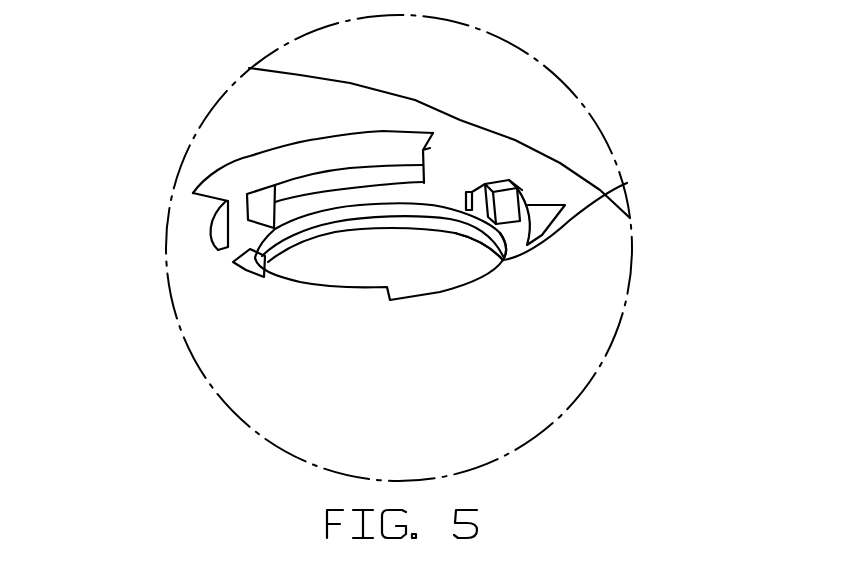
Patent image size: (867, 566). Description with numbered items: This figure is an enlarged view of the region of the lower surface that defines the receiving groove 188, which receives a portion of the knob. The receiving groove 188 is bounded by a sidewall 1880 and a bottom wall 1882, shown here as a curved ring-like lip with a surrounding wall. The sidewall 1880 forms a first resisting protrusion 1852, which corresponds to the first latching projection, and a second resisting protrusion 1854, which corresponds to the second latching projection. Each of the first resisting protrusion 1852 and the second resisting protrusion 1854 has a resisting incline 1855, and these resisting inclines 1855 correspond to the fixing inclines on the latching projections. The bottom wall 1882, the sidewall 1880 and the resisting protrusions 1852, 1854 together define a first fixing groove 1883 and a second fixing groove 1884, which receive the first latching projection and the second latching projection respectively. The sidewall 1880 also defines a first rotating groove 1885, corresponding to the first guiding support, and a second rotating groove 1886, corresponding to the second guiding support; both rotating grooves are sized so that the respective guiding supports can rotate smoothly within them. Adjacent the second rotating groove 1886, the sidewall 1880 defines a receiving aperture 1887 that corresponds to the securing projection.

The receiving groove 188 is at (593, 280).
The first resisting protrusion 1852 is at (611, 177).
The second resisting protrusion 1854 is at (156, 246).
The resisting incline 1855 is at (388, 221).
The sidewall 1880 is at (497, 158).
The bottom wall 1882 is at (480, 115).
The first fixing groove 1883 is at (620, 255).
The second fixing groove 1884 is at (130, 213).
The first rotating groove 1885 is at (631, 209).
The second rotating groove 1886 is at (241, 120).
The receiving aperture 1887 is at (158, 180).